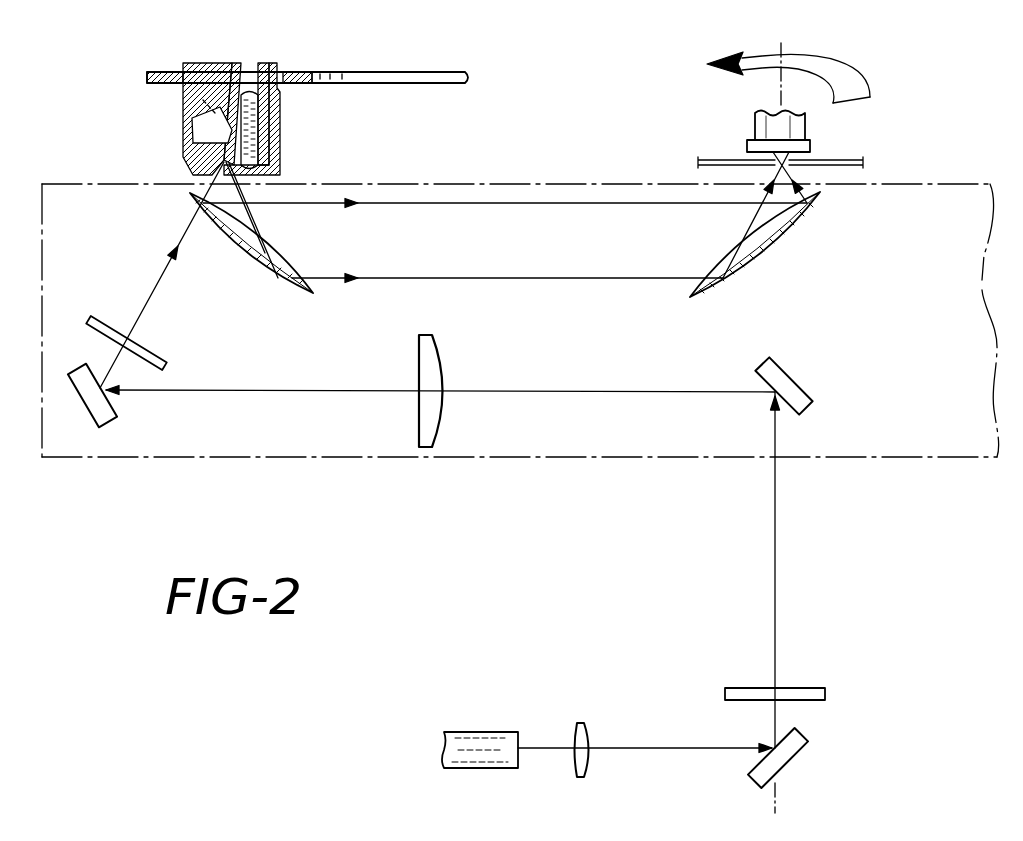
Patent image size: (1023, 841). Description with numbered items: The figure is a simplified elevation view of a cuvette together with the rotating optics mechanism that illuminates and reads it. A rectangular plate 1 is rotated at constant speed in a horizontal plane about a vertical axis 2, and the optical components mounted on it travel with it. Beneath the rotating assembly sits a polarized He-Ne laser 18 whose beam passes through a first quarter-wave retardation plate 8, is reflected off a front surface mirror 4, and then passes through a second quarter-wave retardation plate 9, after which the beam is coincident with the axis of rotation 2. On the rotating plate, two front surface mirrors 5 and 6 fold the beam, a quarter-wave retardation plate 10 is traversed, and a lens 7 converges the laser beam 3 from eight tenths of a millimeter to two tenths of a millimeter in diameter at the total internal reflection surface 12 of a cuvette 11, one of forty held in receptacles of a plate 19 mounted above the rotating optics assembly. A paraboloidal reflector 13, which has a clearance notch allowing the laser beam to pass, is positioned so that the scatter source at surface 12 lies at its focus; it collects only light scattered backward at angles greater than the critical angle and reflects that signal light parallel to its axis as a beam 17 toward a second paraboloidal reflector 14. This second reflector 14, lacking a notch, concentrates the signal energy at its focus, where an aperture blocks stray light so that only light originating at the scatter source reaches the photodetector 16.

The rectangular plate 1 is at (982, 185).
The vertical axis 2 is at (778, 85).
The laser beam 3 is at (325, 388).
The front surface mirror 4 is at (787, 728).
The front surface mirror 5 is at (790, 412).
The front surface mirror 6 is at (118, 407).
The lens 7 is at (447, 363).
The first quarter-wave retardation plate 8 is at (587, 725).
The second quarter-wave retardation plate 9 is at (825, 690).
The quarter-wave retardation plate 10 is at (106, 325).
The cuvette 11 is at (280, 165).
The total internal reflection surface 12 is at (240, 138).
The paraboloidal reflector 13 is at (258, 275).
The second paraboloidal reflector 14 is at (788, 245).
The photodetector 16 is at (748, 148).
The beam 17 is at (507, 207).
The polarized He-Ne laser 18 is at (495, 732).
The plate 19 is at (449, 72).